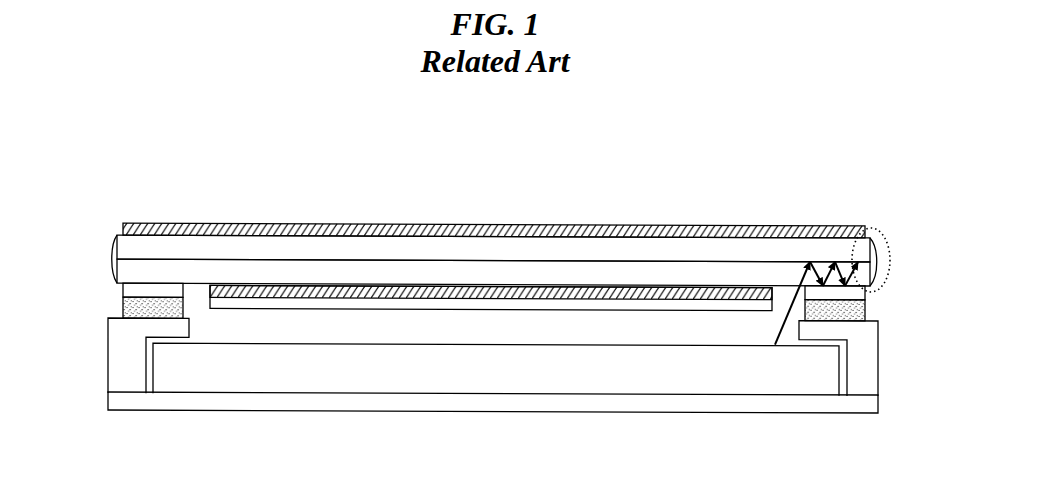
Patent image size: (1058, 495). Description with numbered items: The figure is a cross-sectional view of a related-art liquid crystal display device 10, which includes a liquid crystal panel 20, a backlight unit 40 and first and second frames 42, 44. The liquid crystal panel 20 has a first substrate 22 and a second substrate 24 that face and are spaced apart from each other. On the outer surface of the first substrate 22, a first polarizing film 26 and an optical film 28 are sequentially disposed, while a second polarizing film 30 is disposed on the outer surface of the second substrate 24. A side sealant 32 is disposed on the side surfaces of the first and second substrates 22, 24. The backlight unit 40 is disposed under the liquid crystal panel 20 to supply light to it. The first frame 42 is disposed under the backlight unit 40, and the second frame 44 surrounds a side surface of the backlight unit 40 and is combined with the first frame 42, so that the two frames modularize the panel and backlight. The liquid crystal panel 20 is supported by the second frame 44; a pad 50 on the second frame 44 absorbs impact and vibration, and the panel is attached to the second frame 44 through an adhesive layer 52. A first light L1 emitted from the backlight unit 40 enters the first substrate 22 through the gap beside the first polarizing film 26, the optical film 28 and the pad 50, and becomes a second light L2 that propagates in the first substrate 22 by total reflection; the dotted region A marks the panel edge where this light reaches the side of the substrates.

The liquid crystal display device 10 is at (482, 108).
The liquid crystal panel 20 is at (382, 174).
The first substrate 22 is at (290, 273).
The second substrate 24 is at (242, 246).
The first polarizing film 26 is at (338, 291).
The optical film 28 is at (386, 303).
The second polarizing film 30 is at (193, 223).
The side sealant 32 is at (112, 251).
The backlight unit 40 is at (253, 380).
The first frame 42 is at (197, 400).
The second frame 44 is at (130, 385).
The pad 50 is at (128, 306).
The adhesive layer 52 is at (125, 288).
The first light L1 is at (783, 303).
The second light L2 is at (814, 274).
The light leakage region A is at (890, 259).